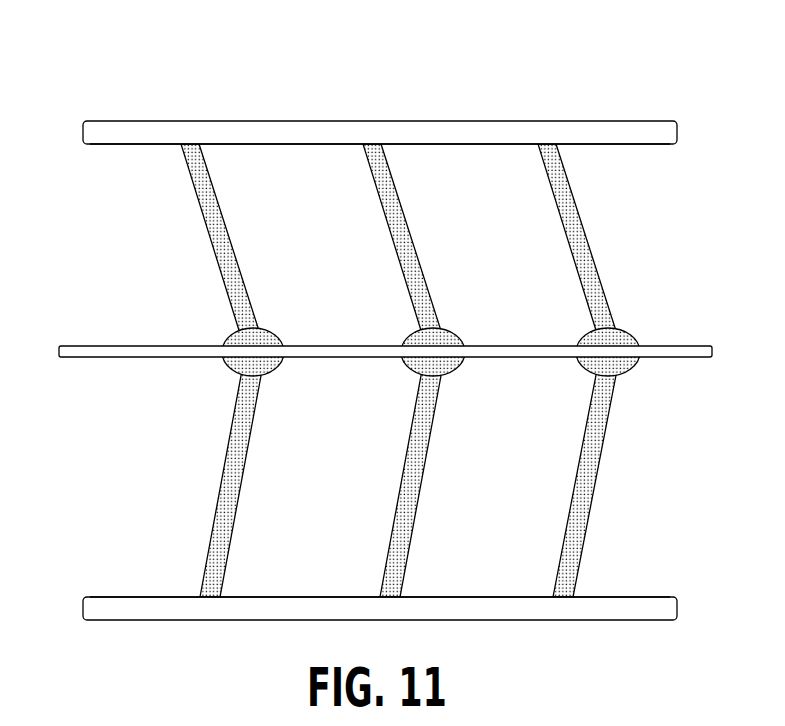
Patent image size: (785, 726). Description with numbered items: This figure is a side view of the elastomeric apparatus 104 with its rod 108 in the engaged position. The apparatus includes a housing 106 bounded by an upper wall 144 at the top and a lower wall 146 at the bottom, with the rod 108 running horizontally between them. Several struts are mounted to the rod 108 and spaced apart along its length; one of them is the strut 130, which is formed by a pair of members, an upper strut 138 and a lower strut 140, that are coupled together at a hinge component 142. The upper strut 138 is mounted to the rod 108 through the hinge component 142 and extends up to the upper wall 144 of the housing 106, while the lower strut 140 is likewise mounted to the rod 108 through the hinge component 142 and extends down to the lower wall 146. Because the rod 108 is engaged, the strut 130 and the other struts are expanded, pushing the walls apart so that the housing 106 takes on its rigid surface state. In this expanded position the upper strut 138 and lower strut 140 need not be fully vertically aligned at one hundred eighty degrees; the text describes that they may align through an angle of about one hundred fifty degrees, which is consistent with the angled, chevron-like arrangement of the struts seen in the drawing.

The elastomeric apparatus 104 is at (372, 321).
The housing 106 is at (110, 120).
The rod 108 is at (110, 345).
The strut 130 is at (351, 370).
The upper strut 138 is at (203, 213).
The lower strut 140 is at (224, 483).
The hinge component 142 is at (233, 336).
The upper wall 144 is at (114, 148).
The lower wall 146 is at (114, 595).